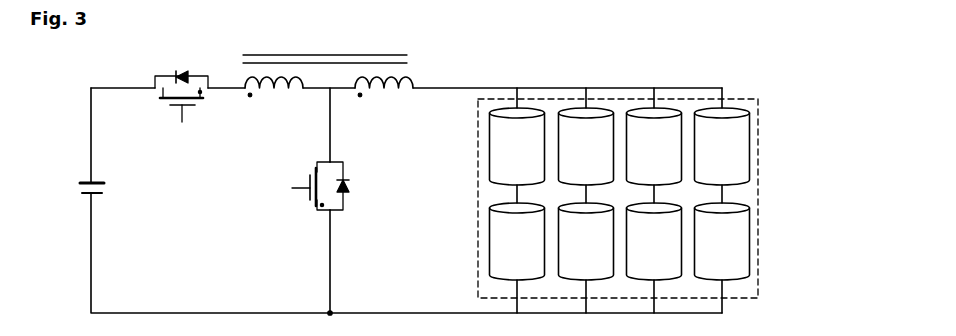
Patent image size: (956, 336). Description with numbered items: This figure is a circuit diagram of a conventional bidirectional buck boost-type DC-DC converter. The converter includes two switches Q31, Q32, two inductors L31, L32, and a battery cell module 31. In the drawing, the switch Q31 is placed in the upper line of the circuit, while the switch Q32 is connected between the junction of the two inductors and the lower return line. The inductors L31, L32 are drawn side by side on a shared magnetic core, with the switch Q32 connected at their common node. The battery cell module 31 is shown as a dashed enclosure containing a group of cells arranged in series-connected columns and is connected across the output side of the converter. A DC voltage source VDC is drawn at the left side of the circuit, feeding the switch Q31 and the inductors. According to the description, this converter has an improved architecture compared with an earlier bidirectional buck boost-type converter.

The battery cell module 31 is at (758, 195).
The switch Q31 is at (168, 102).
The switch Q32 is at (310, 193).
The inductor L31 is at (325, 86).
The inductor L32 is at (384, 97).
The DC voltage source VDC is at (71, 187).